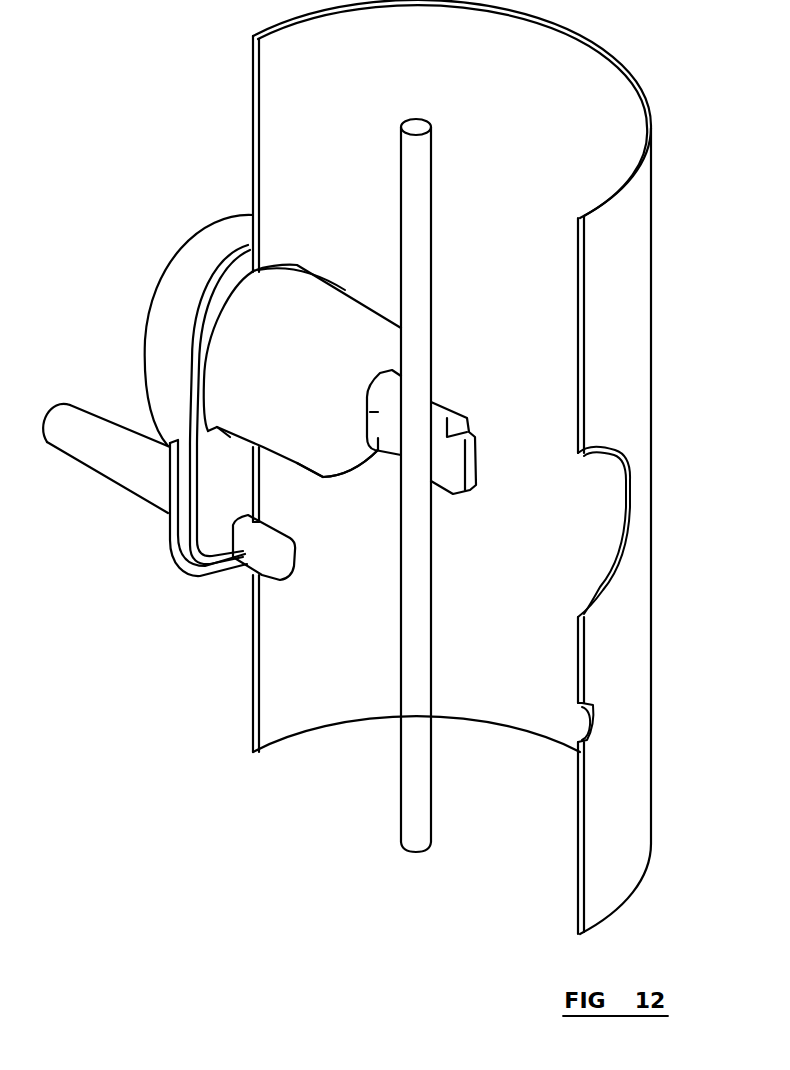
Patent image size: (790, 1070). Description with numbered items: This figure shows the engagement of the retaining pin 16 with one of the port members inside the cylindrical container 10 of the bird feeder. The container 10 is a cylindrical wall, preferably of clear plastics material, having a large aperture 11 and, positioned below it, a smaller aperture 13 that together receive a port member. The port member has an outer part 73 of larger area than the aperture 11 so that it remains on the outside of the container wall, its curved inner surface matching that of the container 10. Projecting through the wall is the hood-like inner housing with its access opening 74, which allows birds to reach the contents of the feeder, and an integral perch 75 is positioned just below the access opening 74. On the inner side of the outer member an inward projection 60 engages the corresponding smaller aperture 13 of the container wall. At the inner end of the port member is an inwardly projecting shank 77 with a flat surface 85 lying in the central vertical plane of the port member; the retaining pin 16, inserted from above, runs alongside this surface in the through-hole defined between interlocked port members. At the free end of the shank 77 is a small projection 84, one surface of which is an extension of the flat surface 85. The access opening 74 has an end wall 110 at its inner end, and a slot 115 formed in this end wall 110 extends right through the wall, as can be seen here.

The cylindrical container 10 is at (630, 313).
The large aperture 11 is at (610, 507).
The smaller aperture 13 is at (582, 715).
The retaining pin 16 is at (420, 185).
The inward projection 60 is at (252, 607).
The outer part 73 is at (187, 277).
The access opening 74 is at (335, 310).
The perch 75 is at (117, 468).
The shank 77 is at (448, 407).
The small projection 84 is at (473, 467).
The flat surface 85 is at (392, 447).
The end wall 110 is at (322, 455).
The slot 115 is at (365, 410).